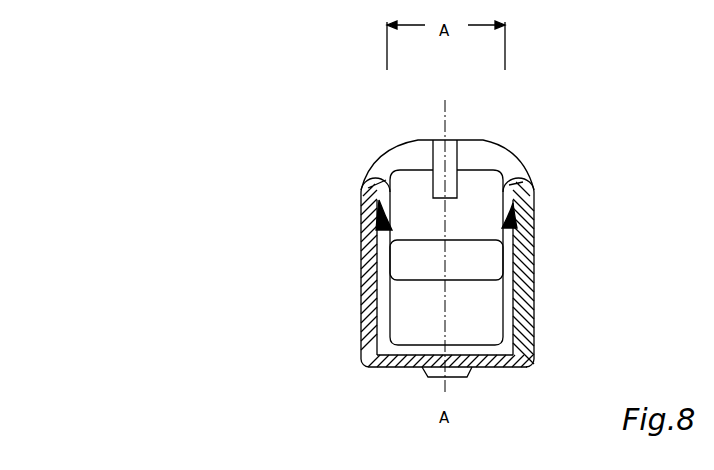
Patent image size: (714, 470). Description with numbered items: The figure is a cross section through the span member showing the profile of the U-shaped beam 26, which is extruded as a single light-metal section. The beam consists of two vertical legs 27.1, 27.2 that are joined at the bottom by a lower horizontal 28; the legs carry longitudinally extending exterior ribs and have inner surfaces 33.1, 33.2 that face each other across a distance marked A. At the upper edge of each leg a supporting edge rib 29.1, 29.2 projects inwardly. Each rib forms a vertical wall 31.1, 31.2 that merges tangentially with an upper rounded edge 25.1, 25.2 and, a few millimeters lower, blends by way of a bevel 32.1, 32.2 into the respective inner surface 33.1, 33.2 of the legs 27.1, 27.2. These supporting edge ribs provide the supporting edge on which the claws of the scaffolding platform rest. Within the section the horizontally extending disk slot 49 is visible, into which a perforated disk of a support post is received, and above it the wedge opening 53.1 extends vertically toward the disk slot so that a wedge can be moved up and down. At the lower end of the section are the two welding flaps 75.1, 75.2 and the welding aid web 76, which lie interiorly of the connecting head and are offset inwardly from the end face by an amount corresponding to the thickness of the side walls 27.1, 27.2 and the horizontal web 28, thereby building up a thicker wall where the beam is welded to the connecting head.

The U-shaped beam 26 is at (540, 297).
The upper rounded edge 25.1 is at (367, 172).
The upper rounded edge 25.2 is at (525, 182).
The vertical leg 27.1 is at (366, 295).
The vertical leg 27.2 is at (525, 247).
The lower horizontal 28 is at (395, 373).
The supporting edge rib 29.1 is at (360, 192).
The supporting edge rib 29.2 is at (532, 193).
The vertical wall 31.1 is at (381, 180).
The vertical wall 31.2 is at (505, 182).
The bevel 32.1 is at (378, 206).
The bevel 32.2 is at (517, 208).
The inner surface 33.1 is at (382, 255).
The inner surface 33.2 is at (505, 293).
The disk slot 49 is at (446, 260).
The wedge opening 53.1 is at (450, 139).
The welding flap 75.1 is at (364, 347).
The welding flap 75.2 is at (527, 327).
The welding aid web 76 is at (463, 348).